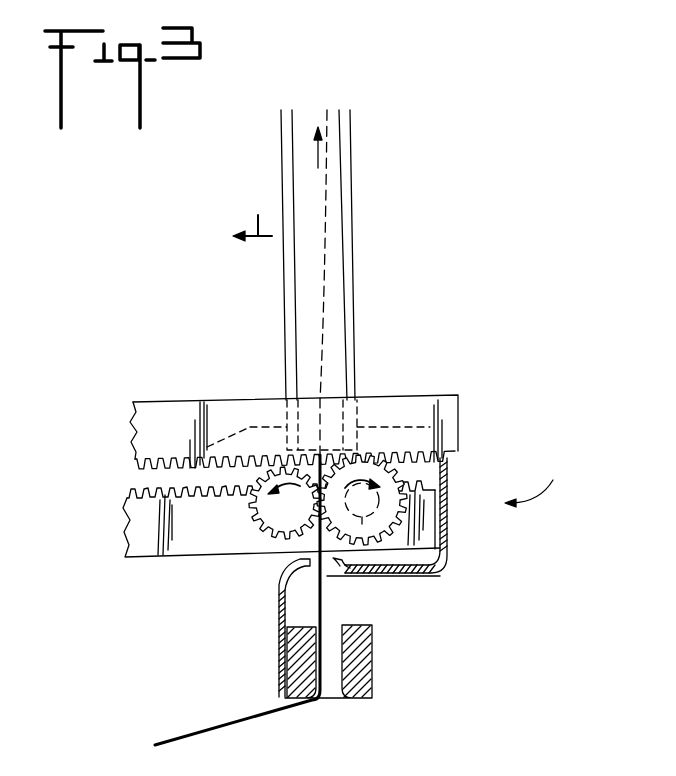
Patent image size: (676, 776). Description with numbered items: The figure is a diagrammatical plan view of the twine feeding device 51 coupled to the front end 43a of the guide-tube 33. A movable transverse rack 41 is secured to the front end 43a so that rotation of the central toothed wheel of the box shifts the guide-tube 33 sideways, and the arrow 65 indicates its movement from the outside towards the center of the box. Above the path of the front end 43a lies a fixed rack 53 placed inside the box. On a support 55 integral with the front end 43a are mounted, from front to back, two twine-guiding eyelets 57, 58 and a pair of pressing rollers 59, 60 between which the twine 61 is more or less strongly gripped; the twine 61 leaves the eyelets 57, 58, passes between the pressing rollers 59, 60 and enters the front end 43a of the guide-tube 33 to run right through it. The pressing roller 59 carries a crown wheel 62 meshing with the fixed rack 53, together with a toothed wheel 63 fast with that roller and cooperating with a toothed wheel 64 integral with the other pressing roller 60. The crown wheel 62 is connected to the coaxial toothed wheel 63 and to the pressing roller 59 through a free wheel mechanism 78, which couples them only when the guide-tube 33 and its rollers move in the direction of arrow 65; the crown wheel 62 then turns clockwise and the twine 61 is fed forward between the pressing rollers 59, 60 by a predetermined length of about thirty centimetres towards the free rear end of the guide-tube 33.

The guide-tube 33 is at (347, 162).
The twine 61 is at (353, 259).
The arrow 65 is at (255, 216).
The front end of the guide-tube 43a is at (355, 389).
The fixed rack 53 is at (183, 402).
The crown wheel 62 is at (425, 461).
The movable transverse rack 41 is at (160, 557).
The toothed wheel 64 is at (270, 540).
The pressing roller 60 is at (262, 513).
The pressing roller 59 is at (396, 516).
The free wheel mechanism 78 is at (377, 570).
The support 55 is at (448, 487).
The toothed wheel 63 is at (402, 563).
The twine feeding device 51 is at (544, 483).
The twine-guiding eyelet 58 is at (335, 578).
The twine-guiding eyelet 57 is at (368, 688).